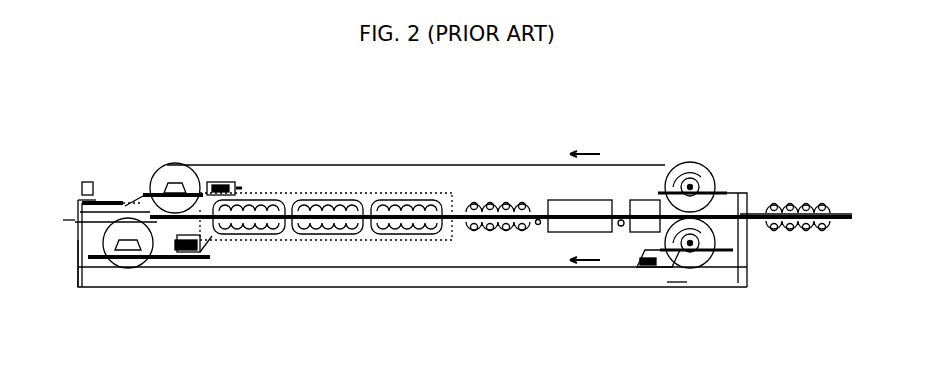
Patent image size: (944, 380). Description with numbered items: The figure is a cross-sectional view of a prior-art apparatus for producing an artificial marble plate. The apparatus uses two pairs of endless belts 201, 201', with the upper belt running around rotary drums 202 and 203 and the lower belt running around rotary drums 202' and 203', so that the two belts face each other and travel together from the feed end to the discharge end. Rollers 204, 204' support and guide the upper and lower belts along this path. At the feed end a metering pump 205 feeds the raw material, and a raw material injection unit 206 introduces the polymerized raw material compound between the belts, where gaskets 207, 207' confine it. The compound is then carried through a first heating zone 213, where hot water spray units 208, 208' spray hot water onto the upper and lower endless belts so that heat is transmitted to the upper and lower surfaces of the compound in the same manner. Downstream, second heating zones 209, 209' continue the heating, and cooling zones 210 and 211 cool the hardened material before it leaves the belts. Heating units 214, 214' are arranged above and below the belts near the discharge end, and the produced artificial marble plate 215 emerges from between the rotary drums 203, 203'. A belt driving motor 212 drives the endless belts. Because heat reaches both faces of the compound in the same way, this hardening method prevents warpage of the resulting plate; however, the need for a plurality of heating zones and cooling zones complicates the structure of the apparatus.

The endless belt 201 is at (412, 200).
The endless belt 201' is at (411, 266).
The rotary drum 202 is at (173, 163).
The rotary drum 202' is at (149, 275).
The rotary drum 203 is at (692, 163).
The rotary drum 203' is at (696, 275).
The roller 204 is at (327, 161).
The roller 204' is at (345, 286).
The metering pump 205 is at (86, 180).
The raw material injection unit 206 is at (153, 178).
The gasket 207 is at (99, 288).
The gasket 207' is at (130, 298).
The hot water spray unit 208 is at (326, 153).
The hot water spray unit 208' is at (250, 283).
The second heating zone 209 is at (494, 163).
The second heating zone 209' is at (493, 277).
The cooling zone 210 is at (542, 164).
The cooling zone 211 is at (630, 164).
The belt driving motor 212 is at (642, 287).
The first heating zone 213 is at (336, 240).
The heating unit 214 is at (791, 182).
The heating unit 214' is at (792, 251).
The produced artificial marble plate 215 is at (848, 213).